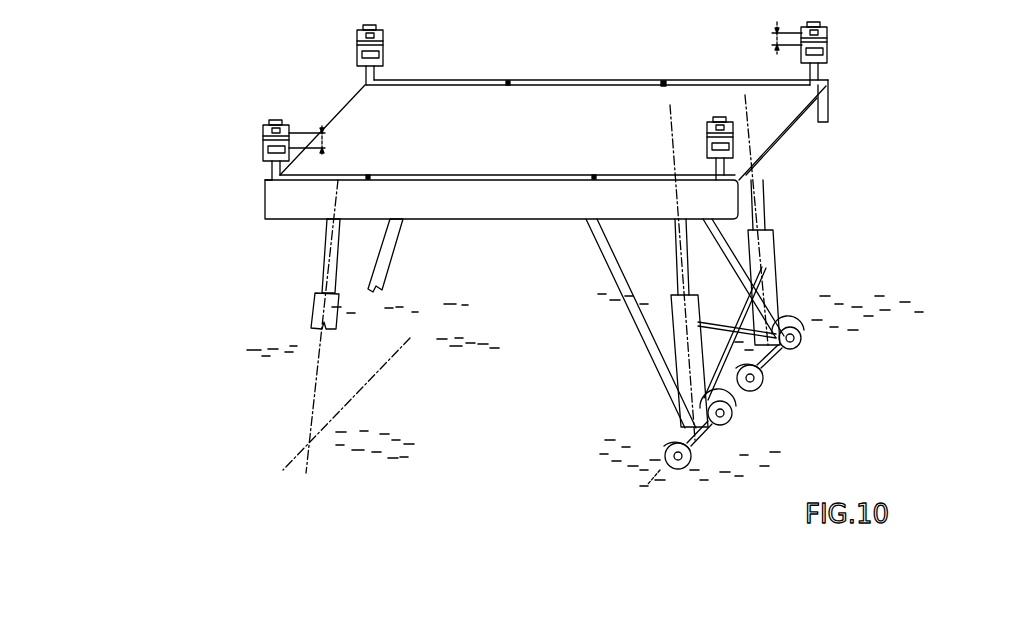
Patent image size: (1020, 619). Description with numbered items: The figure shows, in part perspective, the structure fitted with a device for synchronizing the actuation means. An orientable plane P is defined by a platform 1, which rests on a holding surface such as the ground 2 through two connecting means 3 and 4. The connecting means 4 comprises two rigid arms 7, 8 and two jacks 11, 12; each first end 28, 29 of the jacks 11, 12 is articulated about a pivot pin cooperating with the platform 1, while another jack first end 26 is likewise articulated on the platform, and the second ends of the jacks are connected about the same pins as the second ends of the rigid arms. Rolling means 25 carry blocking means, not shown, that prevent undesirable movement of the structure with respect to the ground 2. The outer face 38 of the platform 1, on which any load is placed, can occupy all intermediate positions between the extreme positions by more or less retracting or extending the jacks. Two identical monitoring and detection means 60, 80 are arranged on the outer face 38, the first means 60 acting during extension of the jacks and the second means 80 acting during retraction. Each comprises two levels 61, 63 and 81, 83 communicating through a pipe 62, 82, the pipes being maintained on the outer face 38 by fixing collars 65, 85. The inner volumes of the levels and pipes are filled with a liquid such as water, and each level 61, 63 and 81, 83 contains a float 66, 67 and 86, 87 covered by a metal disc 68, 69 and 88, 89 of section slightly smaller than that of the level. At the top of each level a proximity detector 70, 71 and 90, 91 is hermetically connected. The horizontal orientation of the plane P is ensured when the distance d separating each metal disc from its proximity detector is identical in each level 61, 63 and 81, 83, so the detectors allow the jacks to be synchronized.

The platform 1 is at (545, 137).
The ground 2 is at (495, 421).
The connecting means 3 is at (302, 297).
The connecting means 4 is at (790, 392).
The rigid arm 7 is at (620, 278).
The rigid arm 8 is at (721, 243).
The jack 11 is at (708, 394).
The jack 12 is at (778, 298).
The rolling means 25 is at (658, 471).
The first end of jack 26 is at (328, 230).
The first end of jack 28 is at (676, 235).
The first end of jack 29 is at (763, 183).
The outer face of platform 38 is at (580, 100).
The monitoring and detection means 60 is at (265, 152).
The level 61 is at (273, 168).
The pipe 62 is at (495, 177).
The level 63 is at (716, 154).
The fixing collar 65 is at (593, 181).
The float 66 is at (267, 155).
The float 67 is at (733, 152).
The metal disc 68 is at (262, 141).
The metal disc 69 is at (768, 140).
The proximity detector 70 is at (277, 120).
The proximity detector 71 is at (718, 118).
The monitoring and detection means 80 is at (353, 44).
The level 81 is at (358, 59).
The pipe 82 is at (509, 81).
The level 83 is at (802, 66).
The fixing collar 85 is at (664, 81).
The float 86 is at (380, 54).
The float 87 is at (826, 51).
The metal disc 88 is at (386, 39).
The metal disc 89 is at (803, 44).
The proximity detector 90 is at (374, 27).
The proximity detector 91 is at (809, 23).
The orientable plane P is at (897, 62).